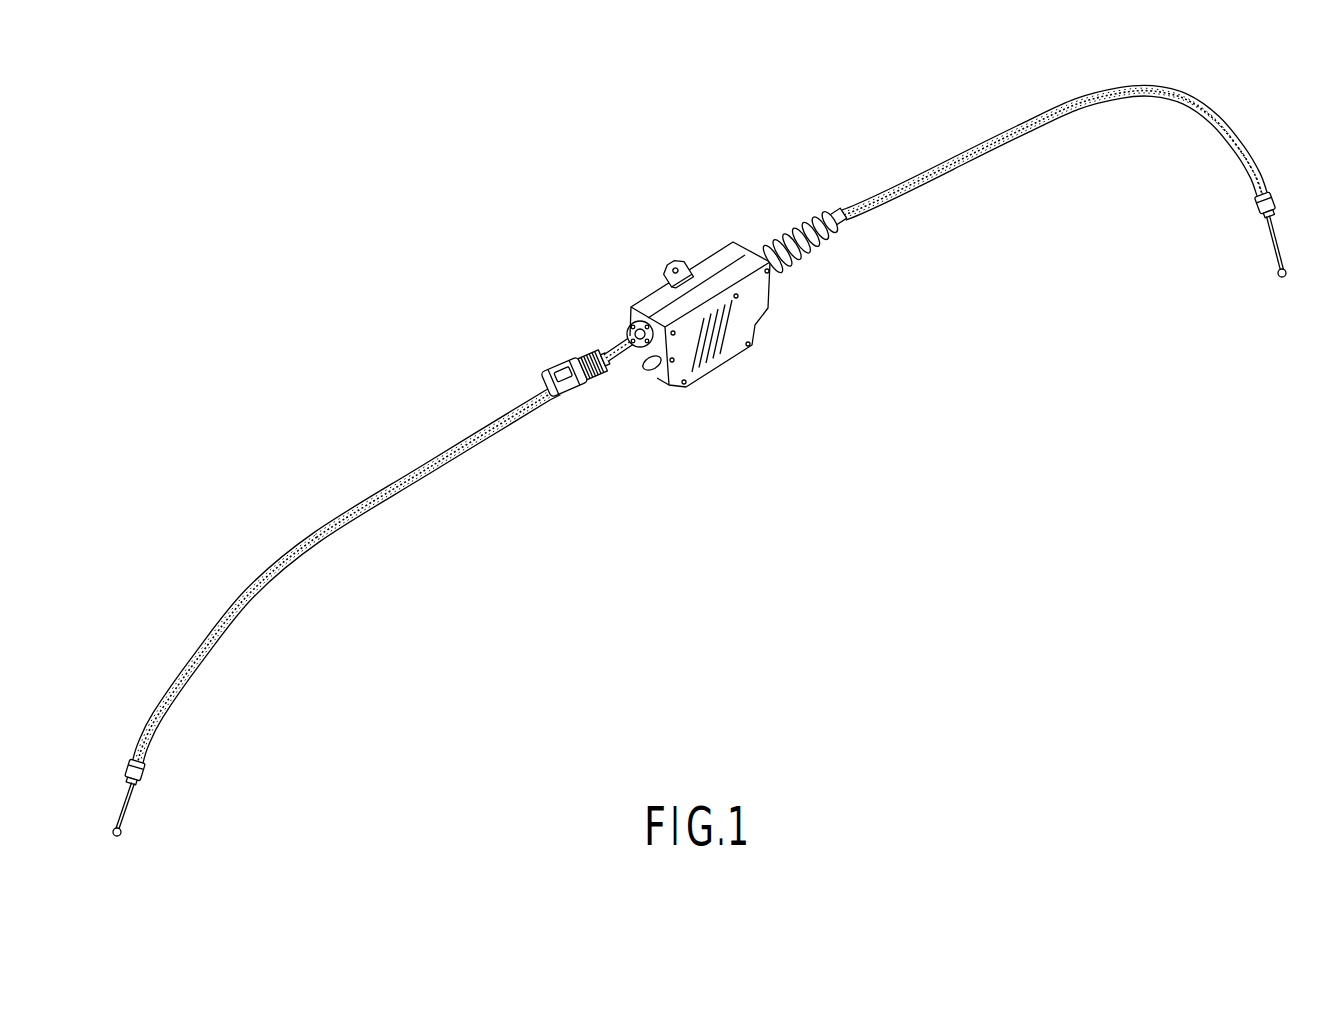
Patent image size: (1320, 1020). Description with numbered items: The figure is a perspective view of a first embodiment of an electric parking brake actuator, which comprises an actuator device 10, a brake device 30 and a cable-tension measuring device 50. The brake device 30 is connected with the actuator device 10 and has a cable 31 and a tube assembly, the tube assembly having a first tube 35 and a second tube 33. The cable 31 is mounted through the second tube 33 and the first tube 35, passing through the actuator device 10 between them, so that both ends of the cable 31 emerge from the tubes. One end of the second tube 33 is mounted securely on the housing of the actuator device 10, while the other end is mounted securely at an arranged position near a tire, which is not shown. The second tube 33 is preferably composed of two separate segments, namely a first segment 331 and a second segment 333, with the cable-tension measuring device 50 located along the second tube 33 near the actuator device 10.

The actuator device 10 is at (647, 273).
The brake device 30 is at (699, 462).
The cable 31 is at (1270, 236).
The second tube 33 is at (266, 589).
The first segment 331 is at (619, 342).
The second segment 333 is at (469, 433).
The first tube 35 is at (1003, 133).
The cable-tension measuring device 50 is at (553, 354).